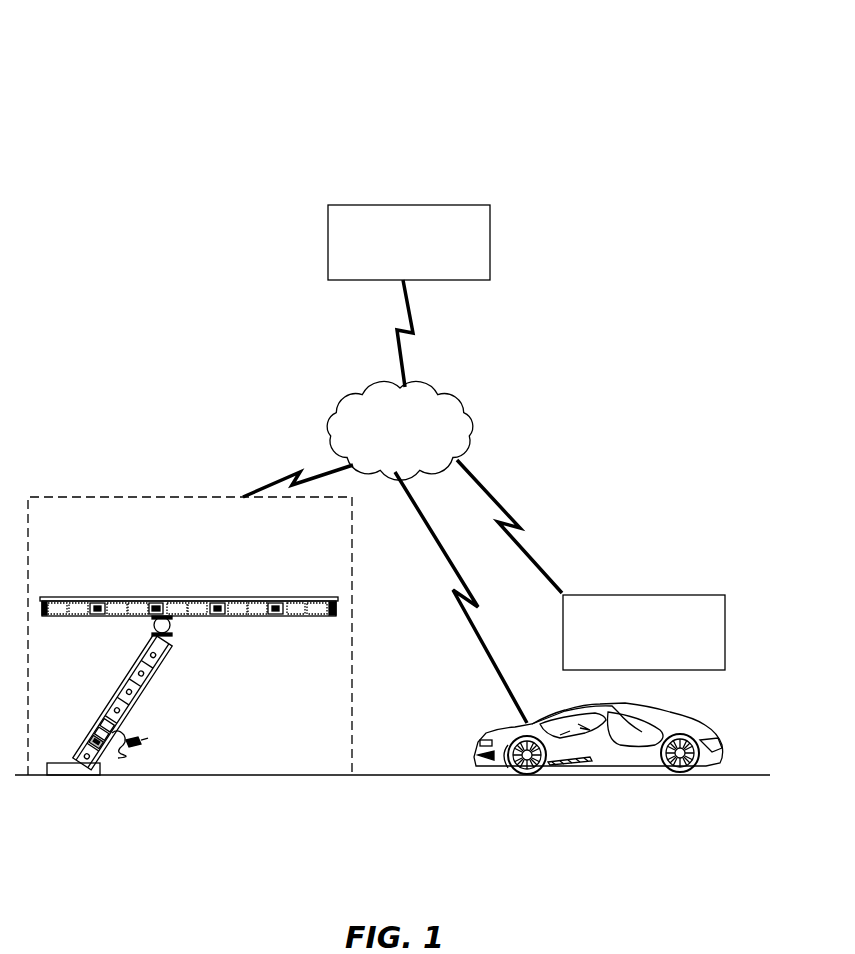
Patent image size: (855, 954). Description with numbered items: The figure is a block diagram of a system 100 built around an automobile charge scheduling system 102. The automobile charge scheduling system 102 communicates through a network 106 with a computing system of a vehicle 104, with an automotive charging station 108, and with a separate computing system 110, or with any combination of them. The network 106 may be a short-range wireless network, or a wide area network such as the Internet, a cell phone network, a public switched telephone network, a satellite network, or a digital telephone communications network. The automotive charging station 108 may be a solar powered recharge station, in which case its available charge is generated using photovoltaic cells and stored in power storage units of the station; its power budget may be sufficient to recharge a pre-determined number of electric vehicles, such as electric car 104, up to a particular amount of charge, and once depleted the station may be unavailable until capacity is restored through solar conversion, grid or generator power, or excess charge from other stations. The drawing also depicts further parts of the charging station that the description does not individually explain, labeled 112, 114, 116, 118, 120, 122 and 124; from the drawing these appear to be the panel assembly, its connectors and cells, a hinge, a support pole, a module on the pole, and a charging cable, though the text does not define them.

The system 100 is at (86, 38).
The automobile charge scheduling system 102 is at (388, 205).
The vehicle 104 is at (505, 728).
The network 106 is at (360, 395).
The automotive charging station 108 is at (87, 497).
The computing system 110 is at (688, 595).
The solar panel array 112 is at (185, 604).
The panel connector 114 is at (81, 616).
The solar cell 116 is at (98, 613).
The hinge 118 is at (172, 627).
The support pole 120 is at (95, 687).
The control module 122 is at (94, 722).
The charging cable 124 is at (133, 742).